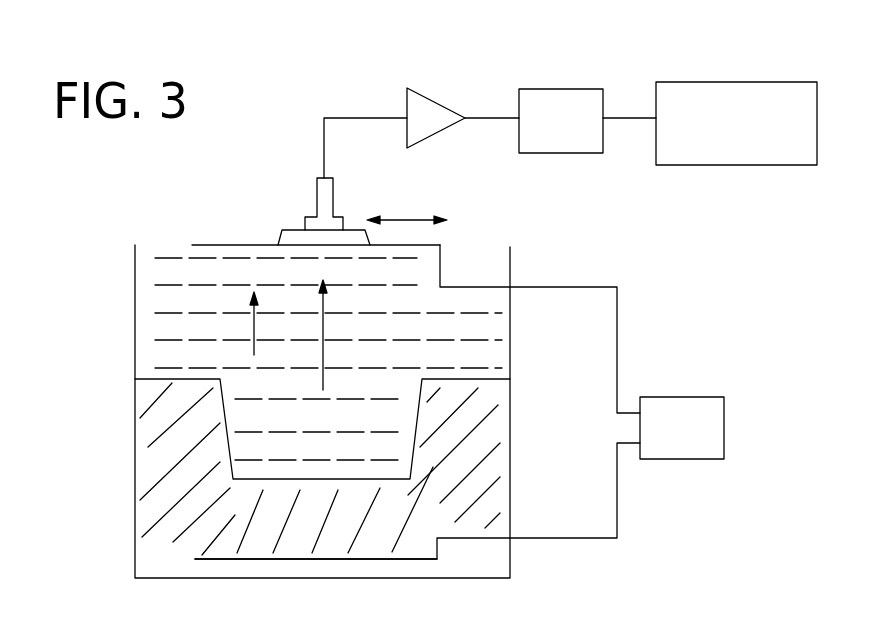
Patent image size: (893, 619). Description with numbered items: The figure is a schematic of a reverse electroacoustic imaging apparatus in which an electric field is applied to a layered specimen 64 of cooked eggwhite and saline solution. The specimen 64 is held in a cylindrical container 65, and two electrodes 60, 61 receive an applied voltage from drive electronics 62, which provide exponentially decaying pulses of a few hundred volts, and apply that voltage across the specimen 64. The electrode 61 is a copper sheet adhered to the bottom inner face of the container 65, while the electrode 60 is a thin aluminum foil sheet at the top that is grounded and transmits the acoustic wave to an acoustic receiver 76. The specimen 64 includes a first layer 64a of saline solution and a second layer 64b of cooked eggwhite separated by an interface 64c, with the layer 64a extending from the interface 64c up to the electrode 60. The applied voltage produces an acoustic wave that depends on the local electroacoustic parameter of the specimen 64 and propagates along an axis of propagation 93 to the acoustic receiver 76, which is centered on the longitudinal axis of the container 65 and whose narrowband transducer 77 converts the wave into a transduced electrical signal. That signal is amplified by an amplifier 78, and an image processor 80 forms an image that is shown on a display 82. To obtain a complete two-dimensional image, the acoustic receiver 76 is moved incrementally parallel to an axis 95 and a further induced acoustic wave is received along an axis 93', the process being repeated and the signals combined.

The electrode 60 is at (443, 245).
The electrode 61 is at (213, 558).
The drive electronics 62 is at (683, 397).
The specimen 64 is at (167, 352).
The first layer 64a is at (173, 315).
The second layer 64b is at (170, 449).
The interface 64c is at (460, 379).
The cylindrical container 65 is at (510, 558).
The acoustic receiver 76 is at (317, 203).
The transducer 77 is at (278, 240).
The amplifier 78 is at (448, 100).
The image processor 80 is at (562, 89).
The display 82 is at (750, 82).
The axis of propagation 93 is at (344, 338).
The axis 93' is at (279, 335).
The axis 95 is at (407, 218).